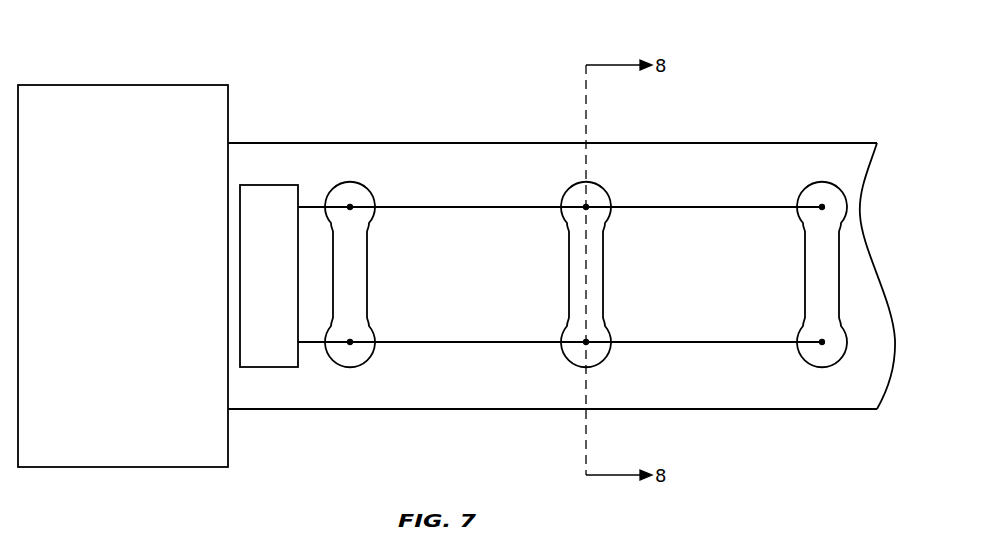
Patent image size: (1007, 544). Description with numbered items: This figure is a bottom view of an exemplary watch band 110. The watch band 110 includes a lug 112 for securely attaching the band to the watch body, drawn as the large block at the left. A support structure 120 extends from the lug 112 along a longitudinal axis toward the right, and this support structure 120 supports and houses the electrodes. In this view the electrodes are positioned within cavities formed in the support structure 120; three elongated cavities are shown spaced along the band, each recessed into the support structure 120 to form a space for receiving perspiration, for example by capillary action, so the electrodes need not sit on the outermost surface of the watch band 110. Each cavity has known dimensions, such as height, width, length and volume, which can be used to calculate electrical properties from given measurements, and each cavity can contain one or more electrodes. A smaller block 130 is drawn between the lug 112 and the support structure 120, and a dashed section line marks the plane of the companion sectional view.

The watch band 110 is at (441, 96).
The lug 112 is at (123, 85).
The support structure 120 is at (442, 388).
The connector block 130 is at (262, 185).